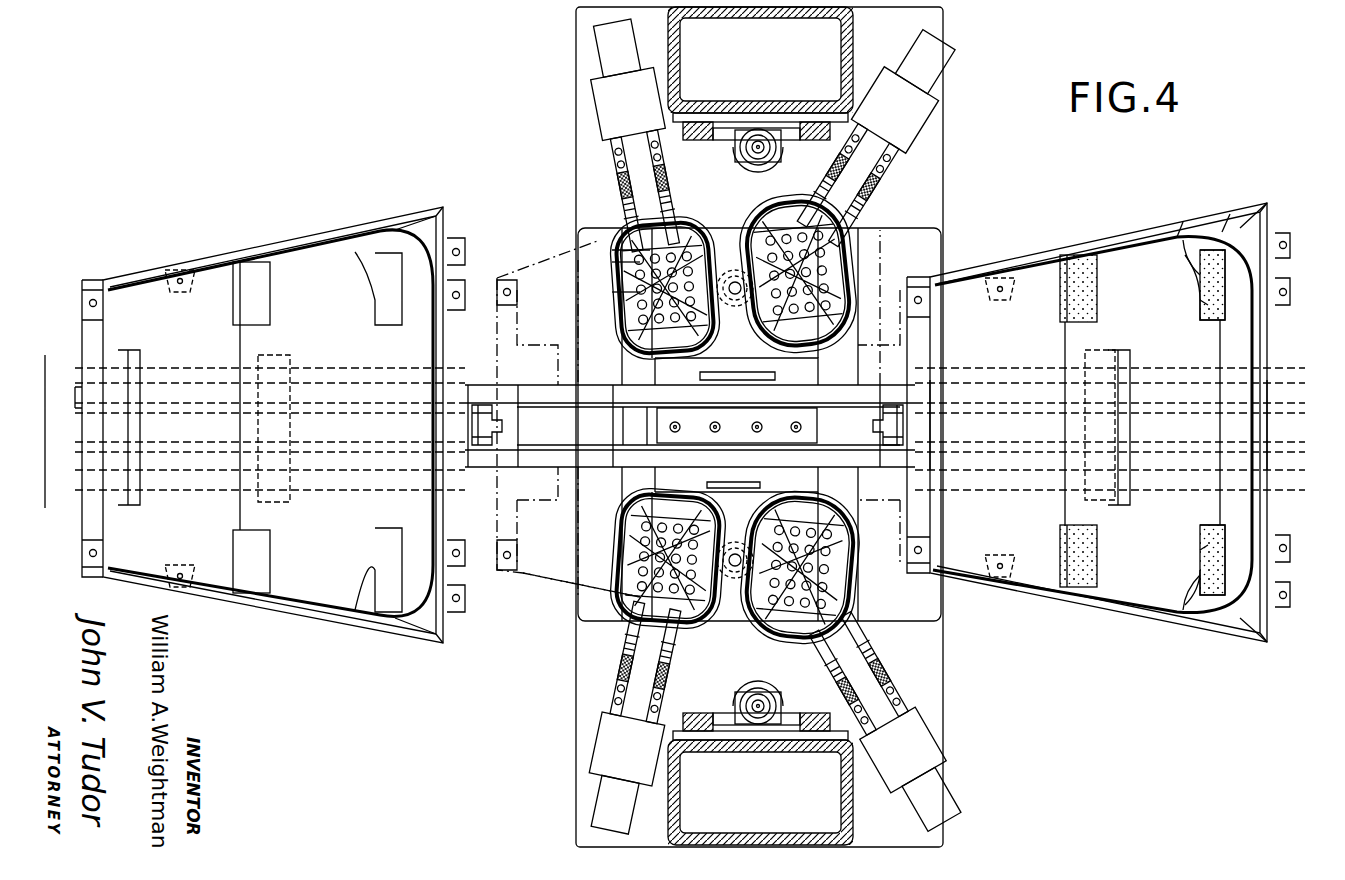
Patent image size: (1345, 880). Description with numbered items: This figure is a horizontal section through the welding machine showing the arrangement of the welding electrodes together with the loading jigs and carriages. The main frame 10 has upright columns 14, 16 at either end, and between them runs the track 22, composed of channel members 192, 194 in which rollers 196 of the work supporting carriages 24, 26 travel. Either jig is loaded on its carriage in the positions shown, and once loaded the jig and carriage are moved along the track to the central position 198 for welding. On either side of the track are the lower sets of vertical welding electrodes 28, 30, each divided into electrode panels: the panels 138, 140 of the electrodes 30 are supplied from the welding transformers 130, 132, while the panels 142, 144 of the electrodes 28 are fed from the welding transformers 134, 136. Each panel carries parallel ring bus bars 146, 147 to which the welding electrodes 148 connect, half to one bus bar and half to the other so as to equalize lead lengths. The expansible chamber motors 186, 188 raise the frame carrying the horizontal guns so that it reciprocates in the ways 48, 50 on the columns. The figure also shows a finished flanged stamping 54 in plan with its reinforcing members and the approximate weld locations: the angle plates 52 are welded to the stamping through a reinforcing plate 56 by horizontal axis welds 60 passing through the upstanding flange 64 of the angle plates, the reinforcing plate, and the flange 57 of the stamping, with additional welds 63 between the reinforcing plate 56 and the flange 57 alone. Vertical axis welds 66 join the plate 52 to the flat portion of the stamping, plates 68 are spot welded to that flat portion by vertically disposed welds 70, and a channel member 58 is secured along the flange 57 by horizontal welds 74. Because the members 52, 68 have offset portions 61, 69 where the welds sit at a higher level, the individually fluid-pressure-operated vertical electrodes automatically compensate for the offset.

The main frame 10 is at (943, 762).
The upright column 14 is at (772, 826).
The upright column 16 is at (745, 14).
The track 22 is at (80, 446).
The work supporting carriage 24 is at (82, 520).
The work supporting carriage 26 is at (1270, 358).
The set of vertical welding electrodes 28 is at (620, 540).
The set of vertical welding electrodes 30 is at (618, 330).
The way 48 is at (792, 724).
The way 50 is at (812, 132).
The reinforcing angle member 52 is at (375, 285).
The flanged stamping 54 is at (323, 605).
The reinforcing plate 56 is at (425, 226).
The flange of the stamping 57 is at (420, 262).
The channel member 58 is at (318, 240).
The horizontal axis weld 60 is at (1183, 222).
The offset portion 61 is at (1225, 305).
The additional weld 63 is at (1236, 208).
The upstanding flange of the angle plate 64 is at (1185, 262).
The vertical axis weld 66 is at (1200, 300).
The plate 68 is at (270, 305).
The offset portion 69 is at (1060, 298).
The vertically disposed weld 70 is at (1085, 285).
The weld 74 is at (1000, 270).
The welding transformer 130 is at (590, 94).
The welding transformer 132 is at (918, 100).
The welding transformer 134 is at (604, 757).
The welding transformer 136 is at (925, 748).
The electrode panel 138 is at (618, 236).
The electrode panel 140 is at (862, 230).
The electrode panel 142 is at (618, 596).
The electrode panel 144 is at (860, 600).
The ring bus bar 146 is at (612, 292).
The ring bus bar 147 is at (612, 262).
The welding electrode 148 is at (612, 250).
The expansible chamber motor 186 is at (750, 690).
The expansible chamber motor 188 is at (757, 160).
The channel member 192 is at (556, 482).
The channel member 194 is at (555, 370).
The roller 196 is at (140, 430).
The central position 198 is at (560, 585).